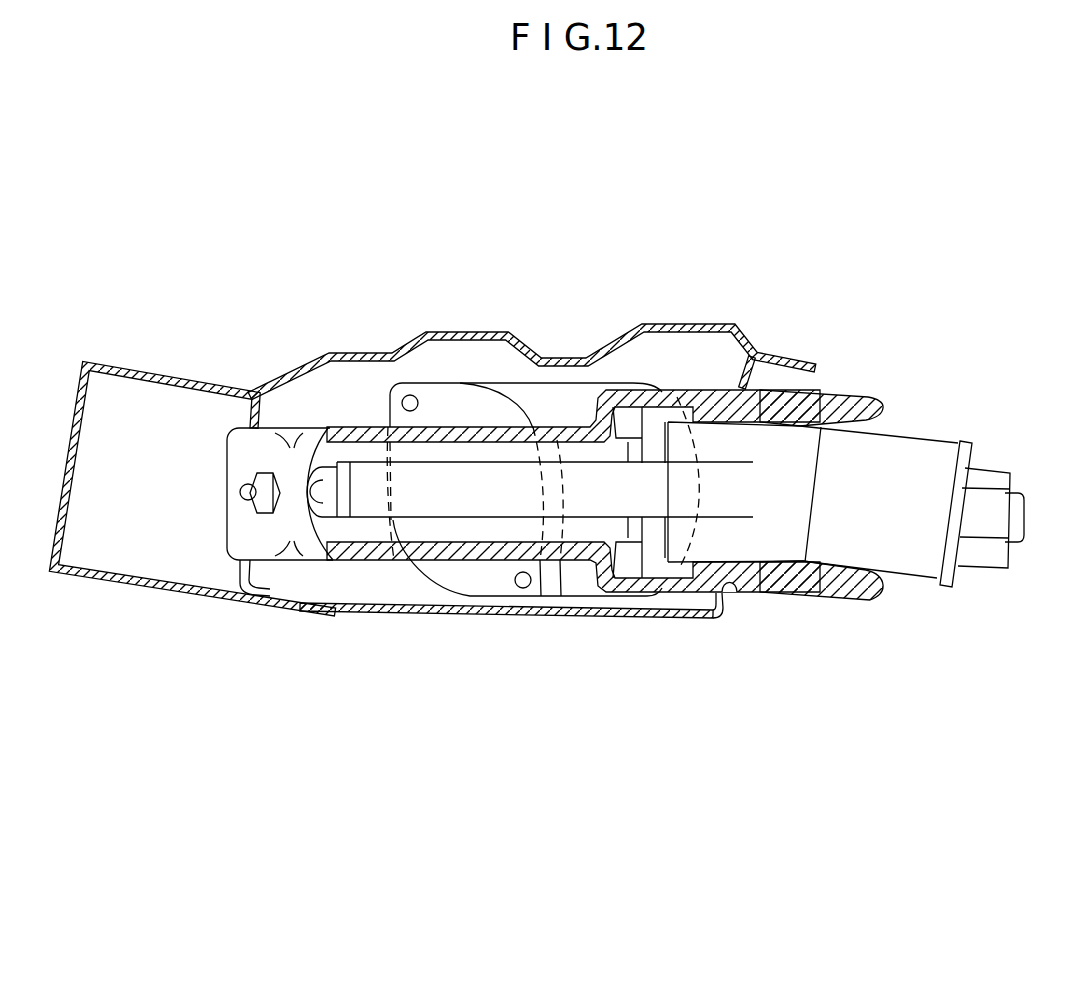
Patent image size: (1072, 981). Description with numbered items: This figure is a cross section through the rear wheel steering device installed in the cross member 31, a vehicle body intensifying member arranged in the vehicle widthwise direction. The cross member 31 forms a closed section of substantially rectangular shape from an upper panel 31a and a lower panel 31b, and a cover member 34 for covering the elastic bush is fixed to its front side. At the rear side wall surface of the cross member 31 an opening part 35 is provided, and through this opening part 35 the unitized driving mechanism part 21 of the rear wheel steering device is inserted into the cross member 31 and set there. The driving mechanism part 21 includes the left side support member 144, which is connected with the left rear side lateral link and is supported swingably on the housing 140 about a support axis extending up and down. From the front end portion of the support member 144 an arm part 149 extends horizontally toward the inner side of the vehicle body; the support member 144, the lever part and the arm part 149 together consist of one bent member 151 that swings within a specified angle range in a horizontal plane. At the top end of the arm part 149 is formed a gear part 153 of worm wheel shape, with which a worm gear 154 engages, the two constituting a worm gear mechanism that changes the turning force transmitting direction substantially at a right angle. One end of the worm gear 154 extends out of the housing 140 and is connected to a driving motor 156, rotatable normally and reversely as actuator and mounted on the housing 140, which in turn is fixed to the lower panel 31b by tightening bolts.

The driving mechanism part 21 is at (685, 362).
The cross member 31 is at (673, 616).
The upper panel 31a is at (470, 337).
The lower panel 31b is at (443, 617).
The cover member 34 is at (157, 368).
The opening part 35 is at (733, 594).
The housing 140 is at (353, 560).
The left side support member 144 is at (910, 573).
The arm part 149 is at (587, 503).
The bent member 151 is at (792, 565).
The gear part 153 is at (340, 517).
The worm gear 154 is at (330, 427).
The driving motor 156 is at (565, 382).